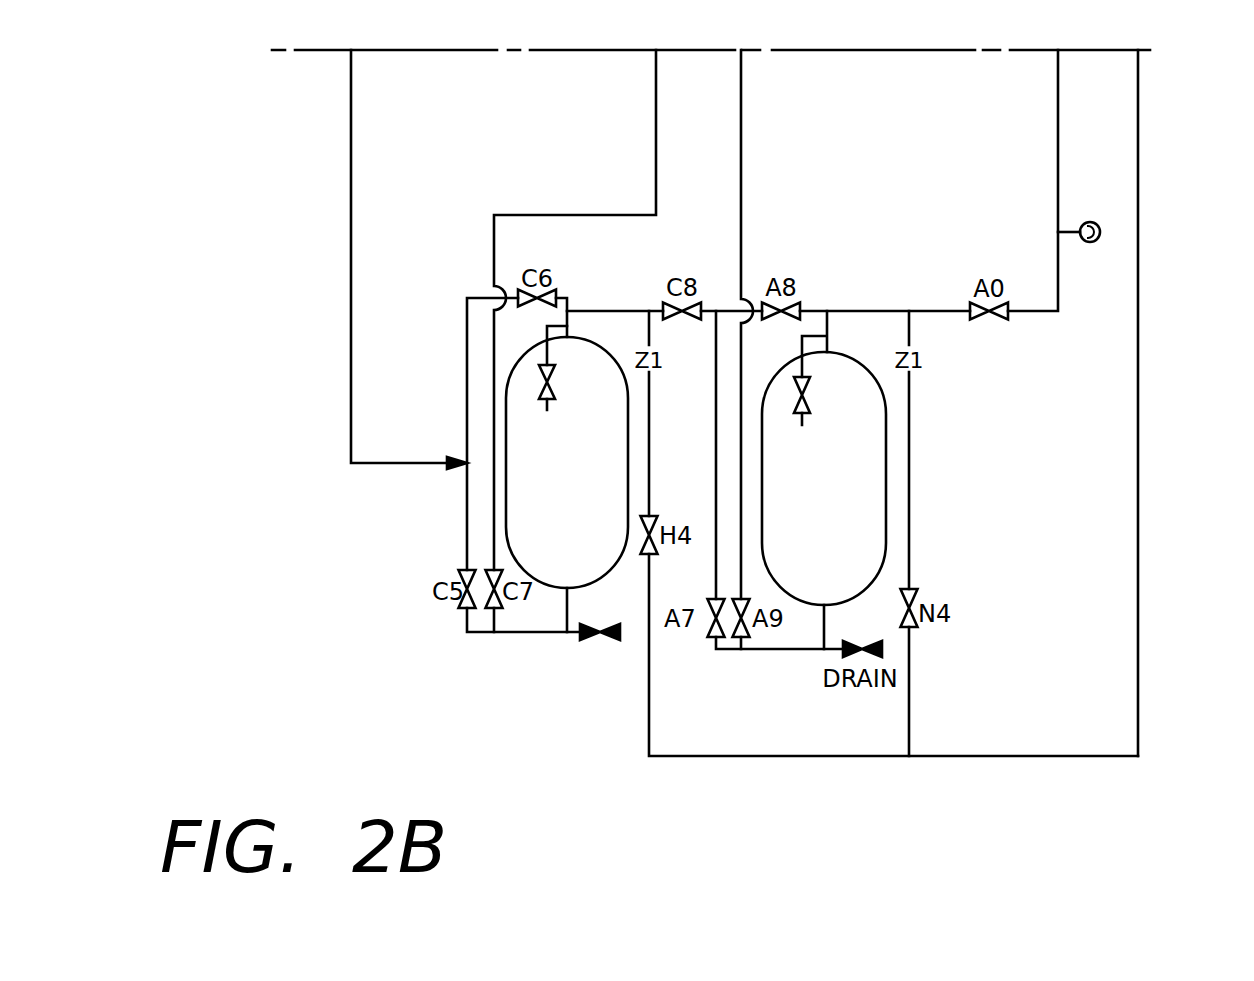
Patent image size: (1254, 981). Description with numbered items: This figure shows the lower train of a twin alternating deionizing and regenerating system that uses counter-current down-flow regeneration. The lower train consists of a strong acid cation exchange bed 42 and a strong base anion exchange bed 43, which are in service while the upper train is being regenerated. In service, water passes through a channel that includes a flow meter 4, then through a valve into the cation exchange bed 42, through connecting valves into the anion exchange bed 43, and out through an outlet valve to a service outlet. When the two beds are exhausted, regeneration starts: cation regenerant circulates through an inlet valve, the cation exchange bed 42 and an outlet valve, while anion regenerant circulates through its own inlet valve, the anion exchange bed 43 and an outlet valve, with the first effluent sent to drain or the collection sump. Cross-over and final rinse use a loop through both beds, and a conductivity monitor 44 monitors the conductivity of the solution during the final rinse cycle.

The flow meter 4 is at (1126, 403).
The cation exchange bed 42 is at (506, 490).
The anion exchange bed 43 is at (873, 452).
The conductivity monitor 44 is at (1090, 222).